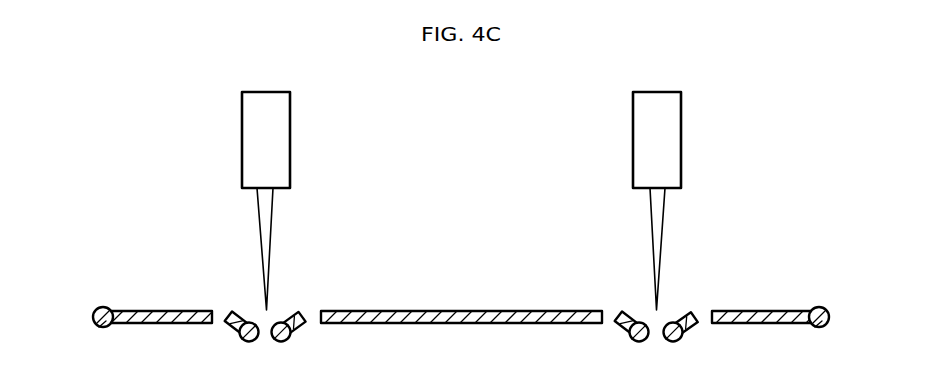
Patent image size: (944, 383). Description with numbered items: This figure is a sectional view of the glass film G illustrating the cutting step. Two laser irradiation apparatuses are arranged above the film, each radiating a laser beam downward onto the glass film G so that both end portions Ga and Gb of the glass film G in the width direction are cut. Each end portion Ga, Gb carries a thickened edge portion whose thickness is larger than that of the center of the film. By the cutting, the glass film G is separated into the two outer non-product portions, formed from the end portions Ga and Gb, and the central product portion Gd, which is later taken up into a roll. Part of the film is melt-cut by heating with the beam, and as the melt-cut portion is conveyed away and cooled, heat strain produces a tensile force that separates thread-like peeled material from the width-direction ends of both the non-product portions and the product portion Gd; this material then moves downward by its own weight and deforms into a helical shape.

The glass film G is at (476, 294).
The end portion Ga is at (91, 304).
The end portion Gb is at (835, 301).
The product portion Gd is at (418, 310).